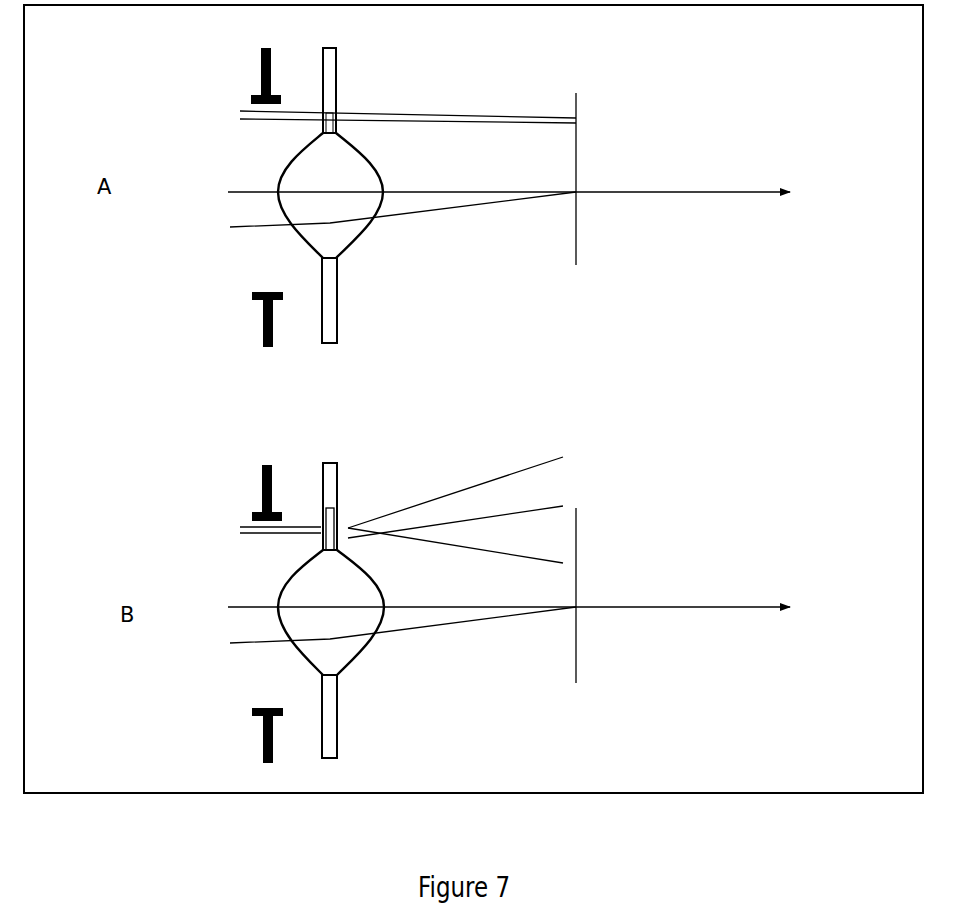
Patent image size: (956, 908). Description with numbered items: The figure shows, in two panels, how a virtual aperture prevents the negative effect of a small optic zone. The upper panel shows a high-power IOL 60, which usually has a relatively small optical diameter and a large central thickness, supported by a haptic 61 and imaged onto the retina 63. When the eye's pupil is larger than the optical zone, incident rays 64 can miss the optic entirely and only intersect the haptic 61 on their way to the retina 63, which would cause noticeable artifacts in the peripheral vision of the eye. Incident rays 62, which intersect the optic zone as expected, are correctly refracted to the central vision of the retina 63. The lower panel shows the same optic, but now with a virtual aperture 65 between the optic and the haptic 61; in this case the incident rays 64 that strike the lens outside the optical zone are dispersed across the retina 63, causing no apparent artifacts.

The high-power IOL 60 is at (347, 404).
The haptic 61 is at (356, 299).
The incident rays 62 is at (283, 499).
The retina 63 is at (584, 412).
The incident rays 64 is at (402, 339).
The virtual aperture 65 is at (315, 526).